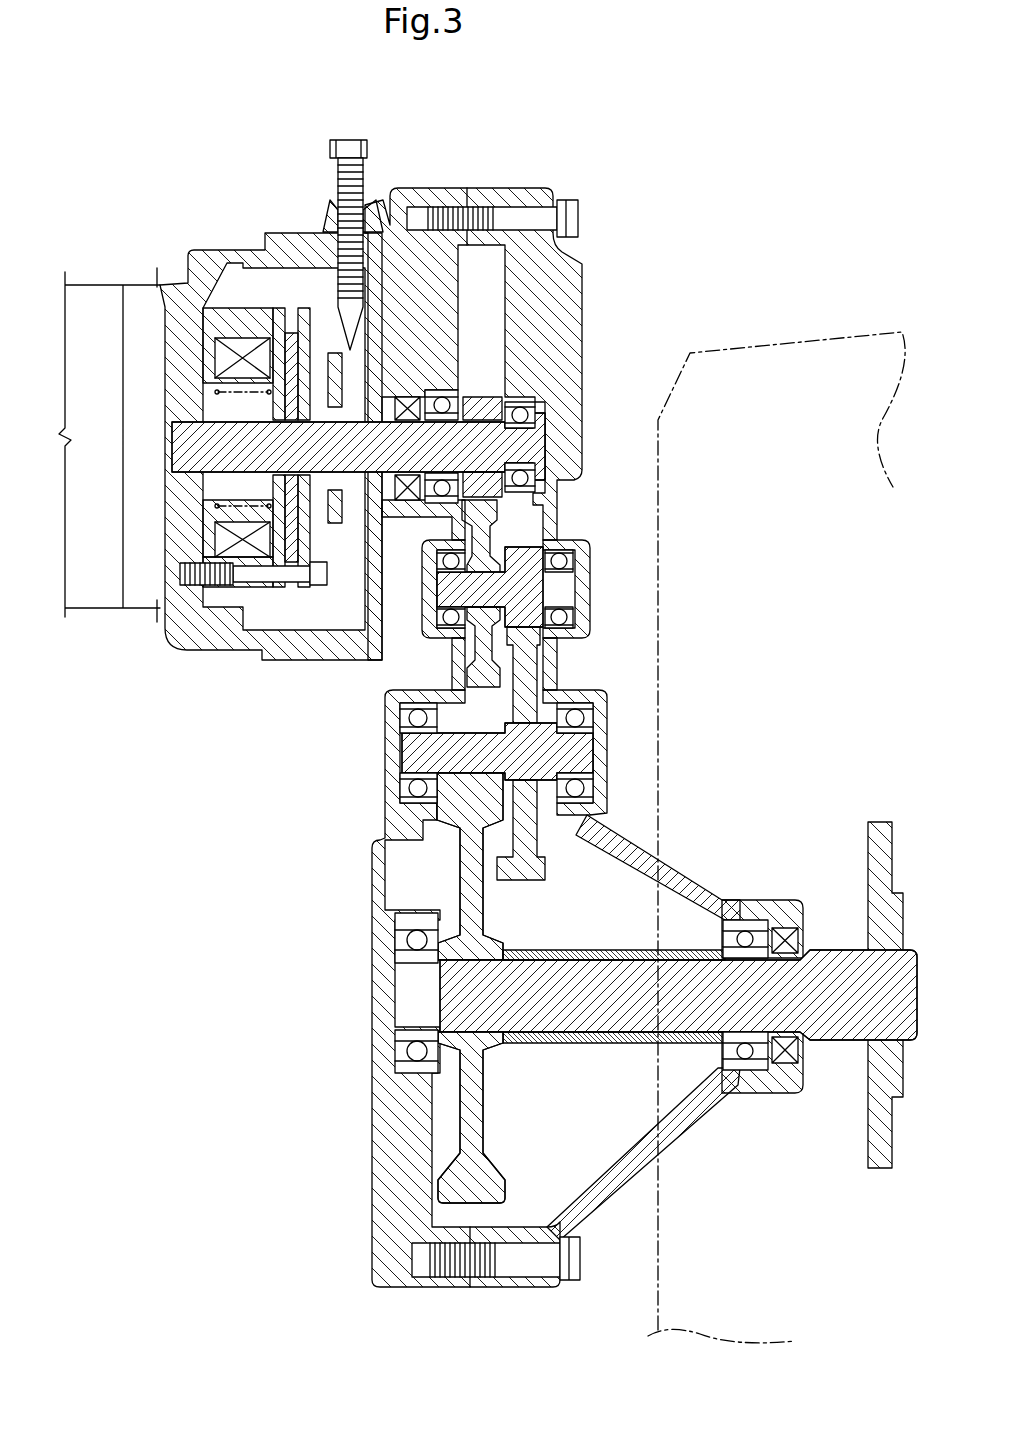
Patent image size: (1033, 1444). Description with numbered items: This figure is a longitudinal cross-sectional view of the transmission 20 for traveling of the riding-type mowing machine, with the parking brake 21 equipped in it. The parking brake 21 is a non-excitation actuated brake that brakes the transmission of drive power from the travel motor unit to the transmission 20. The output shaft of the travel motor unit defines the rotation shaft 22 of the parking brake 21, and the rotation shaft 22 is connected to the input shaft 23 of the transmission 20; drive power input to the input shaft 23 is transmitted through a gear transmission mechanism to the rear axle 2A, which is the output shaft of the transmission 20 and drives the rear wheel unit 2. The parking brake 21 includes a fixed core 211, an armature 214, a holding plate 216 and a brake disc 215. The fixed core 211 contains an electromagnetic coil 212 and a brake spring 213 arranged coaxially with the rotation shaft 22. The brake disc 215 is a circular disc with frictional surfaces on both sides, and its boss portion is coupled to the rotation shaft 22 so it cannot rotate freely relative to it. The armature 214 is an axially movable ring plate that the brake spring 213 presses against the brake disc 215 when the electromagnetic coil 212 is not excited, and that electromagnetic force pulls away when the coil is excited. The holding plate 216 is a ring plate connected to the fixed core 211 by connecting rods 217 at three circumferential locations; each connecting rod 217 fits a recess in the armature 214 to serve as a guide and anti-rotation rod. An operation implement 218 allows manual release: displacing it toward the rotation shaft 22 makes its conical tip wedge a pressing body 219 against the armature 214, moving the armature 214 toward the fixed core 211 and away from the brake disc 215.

The rear wheel unit 2 is at (818, 315).
The rear axle 2A is at (820, 1045).
The transmission 20 is at (562, 172).
The parking brake 21 is at (270, 438).
The rotation shaft 22 is at (170, 440).
The input shaft 23 is at (555, 445).
The fixed core 211 is at (235, 588).
The electromagnetic coil 212 is at (237, 342).
The brake spring 213 is at (172, 483).
The armature 214 is at (290, 338).
The brake disc 215 is at (300, 338).
The holding plate 216 is at (303, 588).
The connecting rod 217 is at (288, 586).
The operation implement 218 is at (366, 172).
The pressing body 219 is at (357, 510).